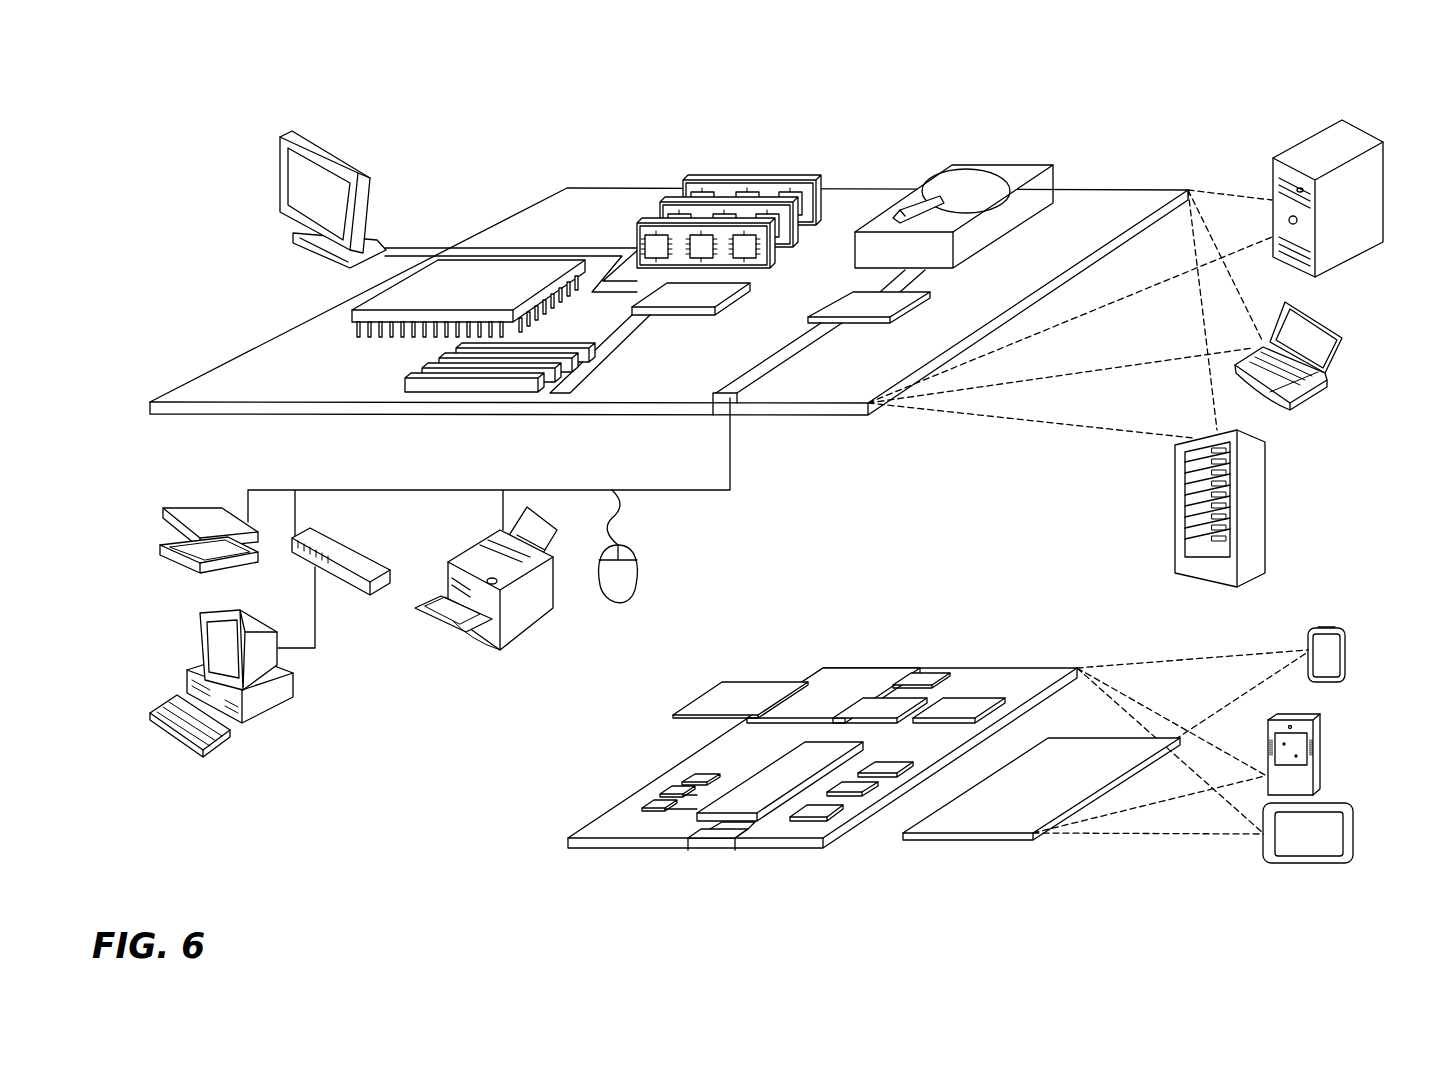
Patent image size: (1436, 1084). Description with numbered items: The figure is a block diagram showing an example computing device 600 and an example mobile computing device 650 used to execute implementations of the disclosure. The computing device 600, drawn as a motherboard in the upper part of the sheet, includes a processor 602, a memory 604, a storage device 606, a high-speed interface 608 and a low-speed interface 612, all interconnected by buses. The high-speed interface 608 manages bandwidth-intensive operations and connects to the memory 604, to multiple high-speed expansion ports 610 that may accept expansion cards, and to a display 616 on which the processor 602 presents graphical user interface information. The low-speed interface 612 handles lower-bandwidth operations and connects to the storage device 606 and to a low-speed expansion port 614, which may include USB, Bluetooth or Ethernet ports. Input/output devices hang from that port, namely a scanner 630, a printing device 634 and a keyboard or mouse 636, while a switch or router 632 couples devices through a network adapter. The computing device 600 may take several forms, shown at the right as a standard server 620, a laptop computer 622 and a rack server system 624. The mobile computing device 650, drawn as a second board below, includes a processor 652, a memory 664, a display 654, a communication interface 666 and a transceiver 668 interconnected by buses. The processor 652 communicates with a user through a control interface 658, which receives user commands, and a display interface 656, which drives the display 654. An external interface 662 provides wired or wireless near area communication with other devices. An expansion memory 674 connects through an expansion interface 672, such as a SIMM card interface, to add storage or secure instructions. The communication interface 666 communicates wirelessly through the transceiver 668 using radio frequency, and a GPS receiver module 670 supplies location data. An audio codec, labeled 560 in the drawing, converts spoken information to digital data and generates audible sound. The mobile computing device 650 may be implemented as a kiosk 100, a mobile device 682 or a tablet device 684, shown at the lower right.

The computing device 600 is at (243, 72).
The processor 602 is at (356, 314).
The memory 604 is at (713, 180).
The storage device 606 is at (1004, 170).
The high-speed interface 608 is at (678, 292).
The high-speed expansion ports 610 is at (430, 377).
The low-speed interface 612 is at (850, 298).
The low-speed expansion port 614 is at (737, 400).
The display 616 is at (290, 134).
The standard server 620 is at (1272, 184).
The laptop computer 622 is at (1330, 312).
The rack server system 624 is at (1172, 508).
The scanner 630 is at (200, 502).
The switch or router 632 is at (358, 597).
The printing device 634 is at (530, 637).
The keyboard or mouse 636 is at (640, 592).
The mobile computing device 650 is at (542, 880).
The processor 652 is at (778, 783).
The display 654 is at (1097, 762).
The display interface 656 is at (838, 812).
The control interface 658 is at (870, 790).
The acoustic sensor 560 is at (887, 762).
The external interface 662 is at (714, 849).
The memory 664 is at (660, 797).
The communication interface 666 is at (890, 706).
The transceiver 668 is at (968, 706).
The GPS receiver module 670 is at (925, 672).
The expansion interface 672 is at (808, 680).
The expansion memory 674 is at (727, 681).
The mobile device 682 is at (1328, 627).
The kiosk 100 is at (1320, 728).
The tablet device 684 is at (1356, 838).